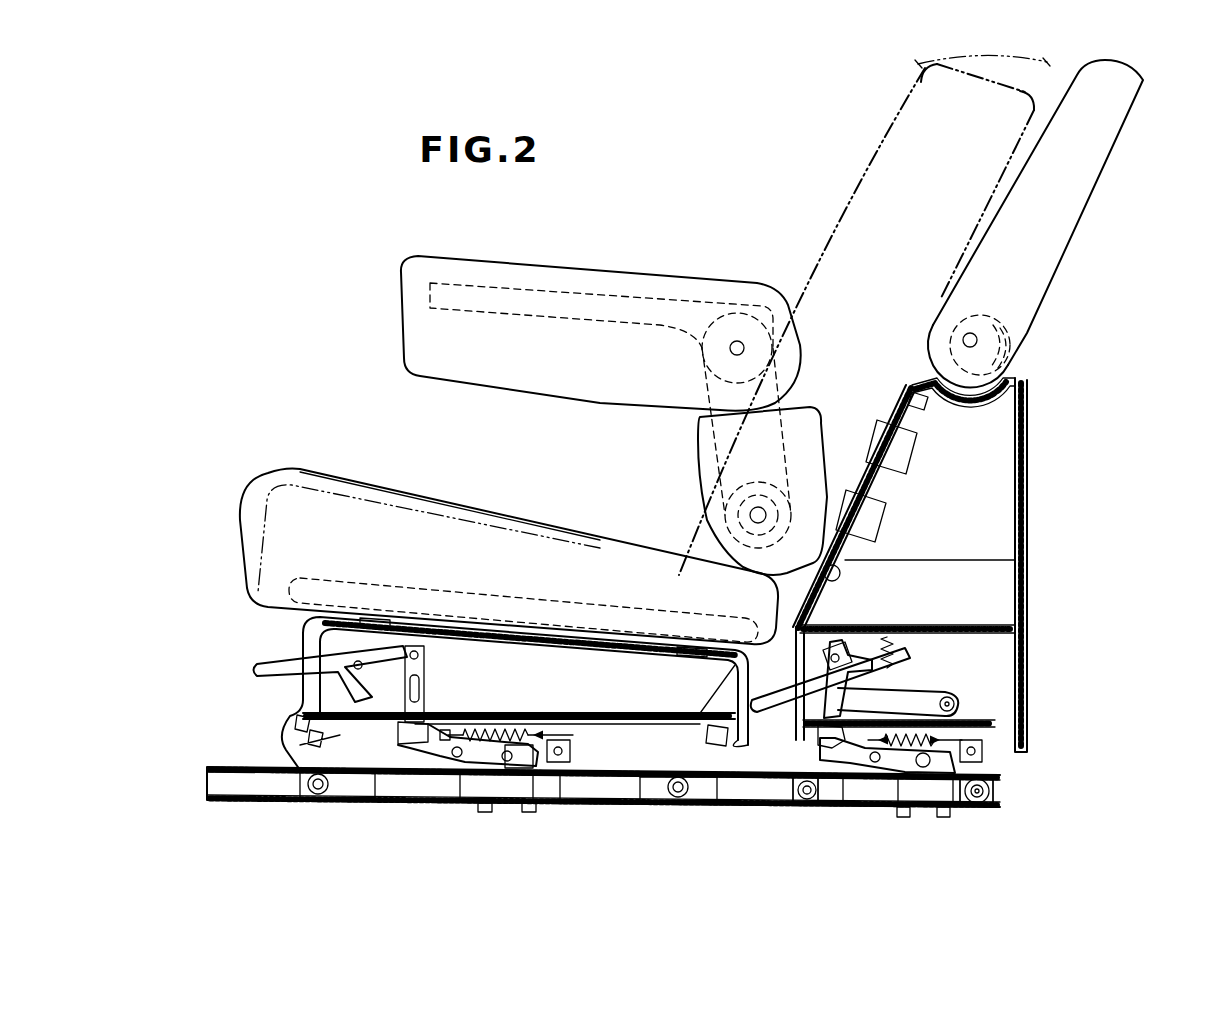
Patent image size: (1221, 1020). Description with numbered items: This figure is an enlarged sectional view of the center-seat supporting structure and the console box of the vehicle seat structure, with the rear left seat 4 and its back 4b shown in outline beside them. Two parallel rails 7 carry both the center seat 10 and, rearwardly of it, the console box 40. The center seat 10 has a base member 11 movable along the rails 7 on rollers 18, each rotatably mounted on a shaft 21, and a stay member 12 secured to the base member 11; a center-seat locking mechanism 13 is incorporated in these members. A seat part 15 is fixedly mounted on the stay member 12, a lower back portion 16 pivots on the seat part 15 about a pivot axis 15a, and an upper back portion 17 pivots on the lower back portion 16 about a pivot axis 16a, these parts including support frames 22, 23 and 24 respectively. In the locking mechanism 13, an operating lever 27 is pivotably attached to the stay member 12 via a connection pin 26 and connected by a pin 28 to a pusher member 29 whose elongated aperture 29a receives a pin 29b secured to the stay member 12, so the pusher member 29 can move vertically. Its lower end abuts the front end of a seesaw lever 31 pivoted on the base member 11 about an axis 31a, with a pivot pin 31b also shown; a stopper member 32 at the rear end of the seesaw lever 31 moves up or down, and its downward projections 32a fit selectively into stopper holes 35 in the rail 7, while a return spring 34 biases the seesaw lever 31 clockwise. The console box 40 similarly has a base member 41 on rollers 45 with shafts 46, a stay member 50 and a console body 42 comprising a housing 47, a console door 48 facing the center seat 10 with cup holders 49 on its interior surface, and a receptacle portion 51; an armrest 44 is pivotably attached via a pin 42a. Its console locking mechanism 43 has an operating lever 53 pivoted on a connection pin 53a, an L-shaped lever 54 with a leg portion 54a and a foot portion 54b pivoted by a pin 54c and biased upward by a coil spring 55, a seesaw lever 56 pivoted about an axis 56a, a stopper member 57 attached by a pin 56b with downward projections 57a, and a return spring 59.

The rear left seat 4 is at (240, 513).
The back 4b is at (847, 197).
The rails 7 is at (245, 770).
The center seat 10 is at (368, 242).
The base member 11 is at (264, 740).
The stay member 12 is at (300, 633).
The center-seat locking mechanism 13 is at (461, 678).
The seat part 15 is at (365, 472).
The pivot axis 15a is at (755, 516).
The lower back portion 16 is at (813, 423).
The pivot axis 16a is at (737, 340).
The upper back portion 17 is at (573, 267).
The rollers 18 is at (337, 777).
The shaft 21 is at (317, 777).
The support frame 22 is at (487, 590).
The support frame 23 is at (723, 500).
The support frame 24 is at (640, 297).
The connection pin 26 is at (360, 669).
The operating lever 27 is at (257, 667).
The pin 28 is at (414, 650).
The pusher member 29 is at (424, 687).
The elongated aperture 29a is at (425, 683).
The pin 29b is at (413, 743).
The seesaw lever 31 is at (445, 718).
The axis 31a is at (460, 757).
The pin 31b is at (510, 760).
The stopper member 32 is at (537, 790).
The downward projections 32a is at (487, 803).
The return spring 34 is at (500, 735).
The stopper holes 35 is at (400, 803).
The console box 40 is at (1114, 247).
The base member 41 is at (990, 760).
The console body 42 is at (1034, 463).
The pin 42a is at (975, 330).
The console locking mechanism 43 is at (948, 677).
The armrest 44 is at (1003, 188).
The rollers 45 is at (997, 800).
The shaft 46 is at (997, 780).
The housing 47 is at (1029, 513).
The console door 48 is at (880, 413).
The cup holders 49 is at (923, 433).
The stay member 50 is at (1028, 647).
The receptacle portion 51 is at (955, 560).
The operating lever 53 is at (773, 700).
The connection pin 53a is at (833, 655).
The L-shaped lever 54 is at (903, 690).
The leg portion 54a is at (903, 690).
The foot portion 54b is at (816, 730).
The pin 54c is at (985, 705).
The coil spring 55 is at (890, 637).
The seesaw lever 56 is at (845, 805).
The axis 56a is at (857, 805).
The pin 56b is at (947, 813).
The stopper member 57 is at (920, 740).
The downward projections 57a is at (947, 812).
The return spring 59 is at (960, 710).